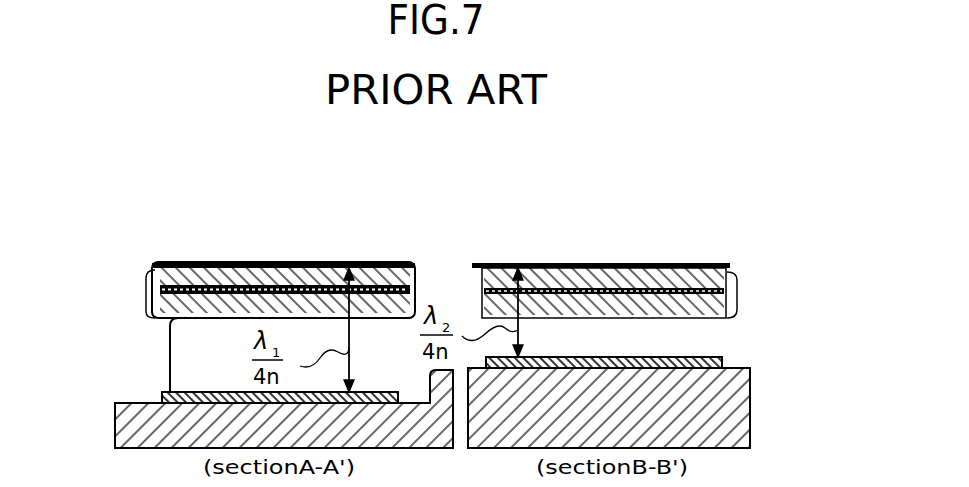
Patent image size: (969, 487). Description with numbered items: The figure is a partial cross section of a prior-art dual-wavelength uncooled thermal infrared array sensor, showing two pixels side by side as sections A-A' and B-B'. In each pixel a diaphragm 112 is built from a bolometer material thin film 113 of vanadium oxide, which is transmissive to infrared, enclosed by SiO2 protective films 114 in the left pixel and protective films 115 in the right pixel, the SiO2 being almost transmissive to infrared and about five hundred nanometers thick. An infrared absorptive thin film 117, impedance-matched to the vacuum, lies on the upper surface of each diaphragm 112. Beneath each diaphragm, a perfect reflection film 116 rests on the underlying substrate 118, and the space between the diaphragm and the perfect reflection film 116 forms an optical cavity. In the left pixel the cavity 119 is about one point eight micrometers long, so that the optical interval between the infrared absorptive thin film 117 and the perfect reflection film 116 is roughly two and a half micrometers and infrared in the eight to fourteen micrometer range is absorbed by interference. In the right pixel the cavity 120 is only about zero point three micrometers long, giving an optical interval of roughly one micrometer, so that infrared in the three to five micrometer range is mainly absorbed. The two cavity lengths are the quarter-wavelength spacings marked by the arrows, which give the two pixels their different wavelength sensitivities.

The diaphragm 112 is at (439, 290).
The bolometer material thin film 113 is at (238, 290).
The protective films 114 is at (224, 280).
The protective films 115 is at (570, 282).
The perfect reflection film 116 is at (166, 395).
The infrared absorptive thin film 117 is at (178, 262).
The substrate 118 is at (750, 403).
The cavity 119 is at (172, 345).
The cavity 120 is at (722, 320).